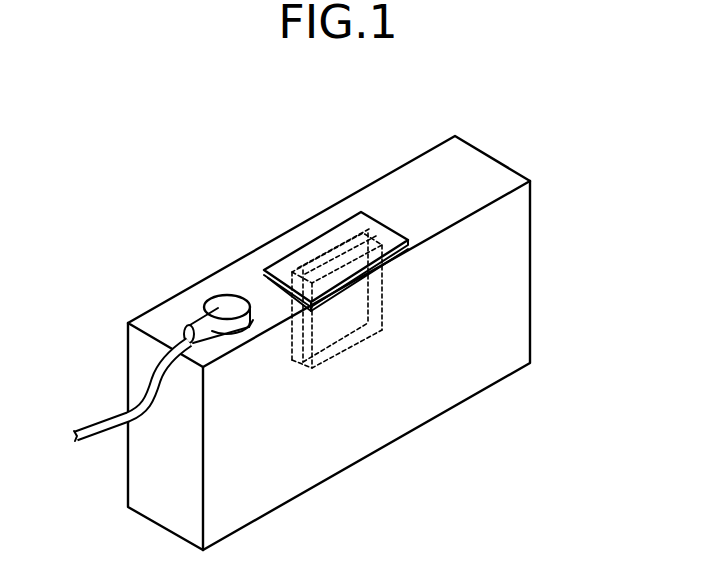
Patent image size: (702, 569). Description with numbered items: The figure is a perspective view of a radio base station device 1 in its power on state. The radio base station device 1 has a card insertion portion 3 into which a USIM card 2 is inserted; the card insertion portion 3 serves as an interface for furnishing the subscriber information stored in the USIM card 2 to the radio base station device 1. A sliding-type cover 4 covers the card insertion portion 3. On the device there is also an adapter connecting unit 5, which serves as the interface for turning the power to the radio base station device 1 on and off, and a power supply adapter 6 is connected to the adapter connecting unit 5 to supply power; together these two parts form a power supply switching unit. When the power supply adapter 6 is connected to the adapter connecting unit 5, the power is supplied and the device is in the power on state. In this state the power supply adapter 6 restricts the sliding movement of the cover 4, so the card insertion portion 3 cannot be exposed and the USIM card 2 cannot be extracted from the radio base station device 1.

The radio base station device 1 is at (327, 462).
The USIM card 2 is at (358, 300).
The card insertion portion 3 is at (357, 343).
The sliding-type cover 4 is at (332, 238).
The adapter connecting unit 5 is at (258, 322).
The power supply adapter 6 is at (228, 307).